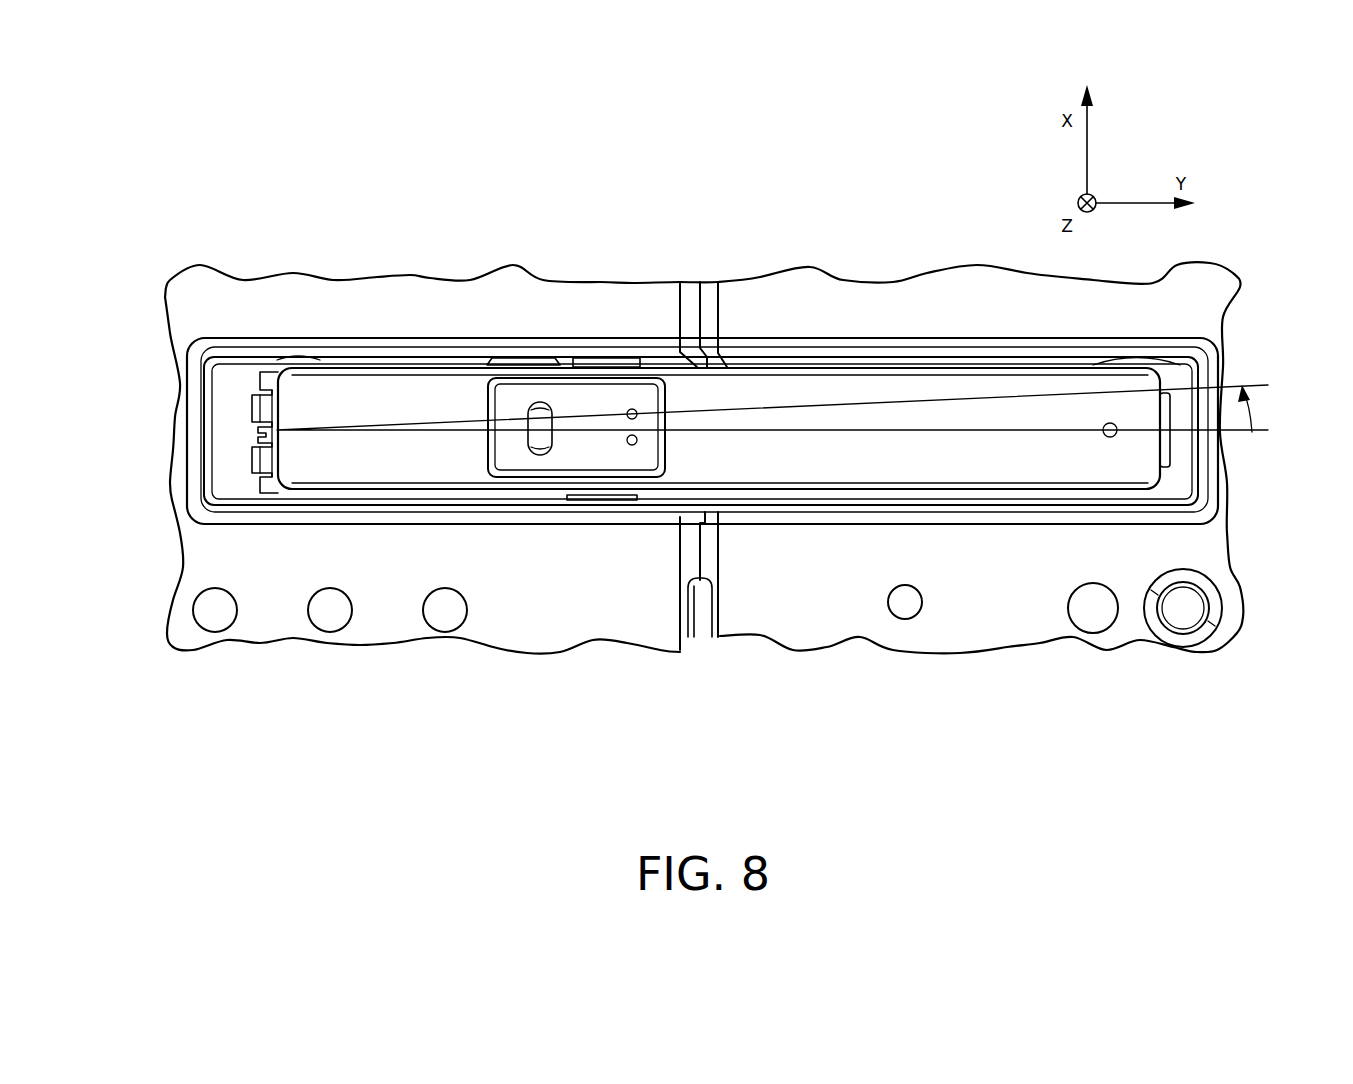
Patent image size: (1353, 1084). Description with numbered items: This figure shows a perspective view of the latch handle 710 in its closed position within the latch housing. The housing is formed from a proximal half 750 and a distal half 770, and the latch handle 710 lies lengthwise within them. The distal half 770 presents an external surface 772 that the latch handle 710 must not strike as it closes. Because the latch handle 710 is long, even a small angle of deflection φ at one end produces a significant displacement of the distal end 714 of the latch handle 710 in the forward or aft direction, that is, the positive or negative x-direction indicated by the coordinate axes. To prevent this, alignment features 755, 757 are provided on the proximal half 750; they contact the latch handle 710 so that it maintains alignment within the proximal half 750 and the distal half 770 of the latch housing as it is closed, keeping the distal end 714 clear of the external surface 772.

The proximal half of the latch housing 750 is at (393, 318).
The alignment feature 755 is at (595, 358).
The external surface 772 is at (797, 340).
The distal half of the latch housing 770 is at (913, 307).
The alignment feature 757 is at (587, 500).
The latch handle 710 is at (680, 482).
The distal end of the latch handle 714 is at (1105, 500).